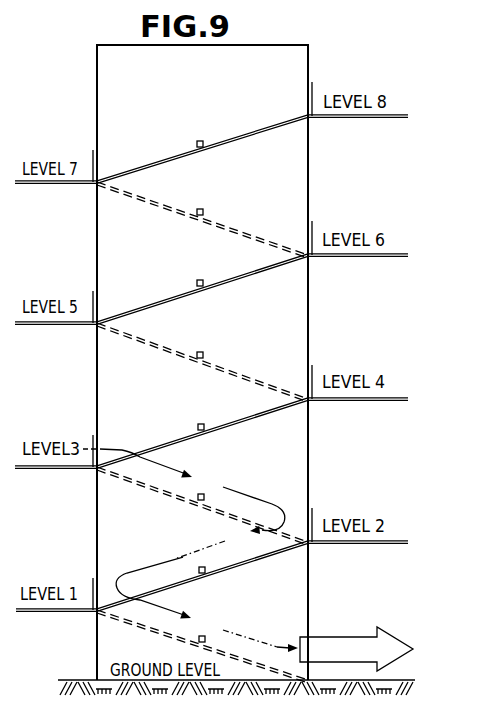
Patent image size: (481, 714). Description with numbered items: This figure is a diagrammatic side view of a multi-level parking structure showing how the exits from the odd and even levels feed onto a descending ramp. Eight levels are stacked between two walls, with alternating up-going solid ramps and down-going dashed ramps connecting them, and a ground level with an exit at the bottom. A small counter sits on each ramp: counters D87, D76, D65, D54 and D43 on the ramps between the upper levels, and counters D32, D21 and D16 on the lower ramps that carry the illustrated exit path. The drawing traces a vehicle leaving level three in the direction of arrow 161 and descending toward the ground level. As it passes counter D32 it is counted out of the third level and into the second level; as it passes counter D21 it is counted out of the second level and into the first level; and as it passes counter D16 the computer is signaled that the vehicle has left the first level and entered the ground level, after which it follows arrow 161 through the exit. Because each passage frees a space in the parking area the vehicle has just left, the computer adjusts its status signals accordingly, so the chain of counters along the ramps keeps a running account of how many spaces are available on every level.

The vehicle detector between levels 8 and 7 D87 is at (200, 141).
The vehicle detector between levels 7 and 6 D76 is at (203, 209).
The vehicle detector between levels 6 and 5 D65 is at (200, 280).
The vehicle detector between levels 5 and 4 D54 is at (202, 352).
The vehicle detector between levels 4 and 3 D43 is at (201, 424).
The counter D32 is at (203, 494).
The counter D21 is at (201, 567).
The counter D16 is at (202, 636).
The arrow 161 is at (357, 638).